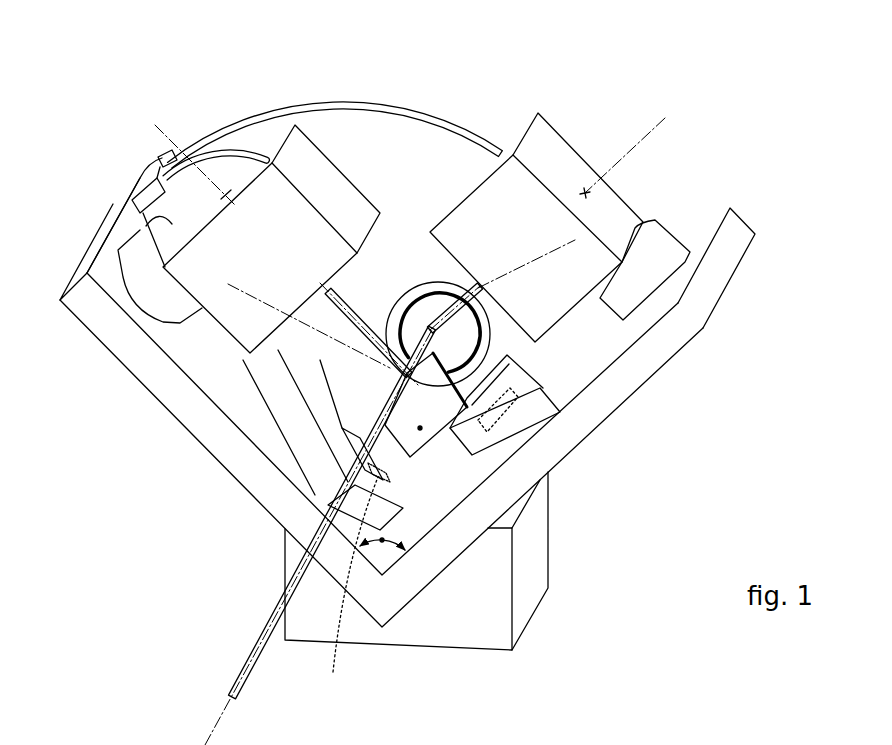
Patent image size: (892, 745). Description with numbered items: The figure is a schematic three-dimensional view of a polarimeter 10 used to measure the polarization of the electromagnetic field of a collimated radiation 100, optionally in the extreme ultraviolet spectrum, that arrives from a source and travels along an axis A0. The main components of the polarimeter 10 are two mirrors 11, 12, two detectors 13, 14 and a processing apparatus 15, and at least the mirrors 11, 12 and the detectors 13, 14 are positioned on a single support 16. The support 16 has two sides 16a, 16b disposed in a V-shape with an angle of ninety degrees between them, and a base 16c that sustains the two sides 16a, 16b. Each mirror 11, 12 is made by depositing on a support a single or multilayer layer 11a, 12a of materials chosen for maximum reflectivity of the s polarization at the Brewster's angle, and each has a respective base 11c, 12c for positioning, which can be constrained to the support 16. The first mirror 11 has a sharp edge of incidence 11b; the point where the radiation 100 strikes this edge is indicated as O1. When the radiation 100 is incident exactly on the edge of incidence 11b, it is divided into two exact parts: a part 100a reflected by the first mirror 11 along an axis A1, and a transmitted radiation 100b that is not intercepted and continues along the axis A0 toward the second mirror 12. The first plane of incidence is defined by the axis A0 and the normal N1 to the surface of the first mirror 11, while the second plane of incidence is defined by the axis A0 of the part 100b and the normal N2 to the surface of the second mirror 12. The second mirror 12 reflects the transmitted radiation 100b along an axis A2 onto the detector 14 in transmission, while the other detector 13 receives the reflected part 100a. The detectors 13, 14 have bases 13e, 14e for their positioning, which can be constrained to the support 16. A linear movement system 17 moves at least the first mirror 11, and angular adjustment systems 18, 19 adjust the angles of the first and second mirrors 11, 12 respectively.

The polarimeter 10 is at (190, 62).
The first mirror 11 is at (437, 448).
The layer of first mirror 11a is at (420, 428).
The edge of incidence 11b is at (332, 448).
The base of first mirror 11c is at (345, 460).
The second mirror 12 is at (407, 283).
The layer of second mirror 12a is at (432, 310).
The base of second mirror 12c is at (410, 380).
The detector 13 is at (277, 137).
The base of detector 13e is at (137, 257).
The detector in transmission 14 is at (560, 138).
The base of transmission detector 14e is at (662, 245).
The processing apparatus 15 is at (147, 178).
The support 16 is at (137, 391).
The first side of support 16a is at (122, 335).
The second side of support 16b is at (666, 343).
The base of support 16c is at (525, 604).
The linear movement system 17 is at (285, 413).
The angular adjustment system of first mirror 18 is at (349, 583).
The angular adjustment system of second mirror 19 is at (500, 435).
The collimated radiation 100 is at (252, 650).
The reflected part of radiation 100a is at (332, 312).
The transmitted radiation 100b is at (430, 347).
The axis of the radiation A0 is at (213, 727).
The axis of reflected radiation A1 is at (168, 140).
The axis of radiation reflected by second mirror A2 is at (652, 130).
The normal to first mirror surface N1 is at (253, 298).
The normal to second mirror surface N2 is at (533, 265).
The point of incidence O1 is at (537, 407).